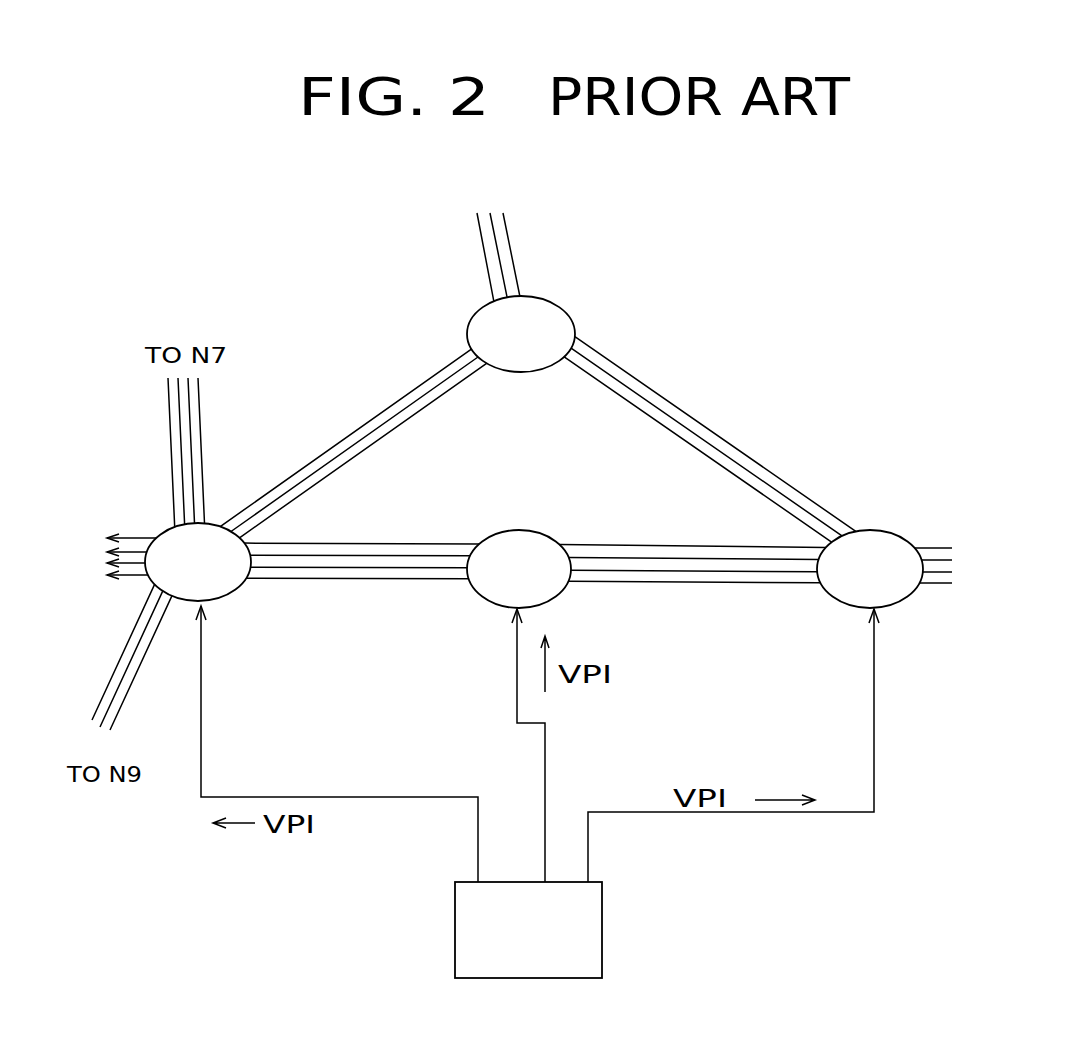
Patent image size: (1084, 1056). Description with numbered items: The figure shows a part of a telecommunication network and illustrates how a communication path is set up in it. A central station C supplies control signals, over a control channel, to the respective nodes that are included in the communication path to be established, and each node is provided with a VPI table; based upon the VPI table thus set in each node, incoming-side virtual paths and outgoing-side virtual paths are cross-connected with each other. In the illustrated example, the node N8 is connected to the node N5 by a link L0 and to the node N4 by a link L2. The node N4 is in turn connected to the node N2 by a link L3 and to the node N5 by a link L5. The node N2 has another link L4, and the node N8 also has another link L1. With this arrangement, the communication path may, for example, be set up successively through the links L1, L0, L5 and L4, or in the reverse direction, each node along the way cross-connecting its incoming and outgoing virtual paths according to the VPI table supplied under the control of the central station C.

The node N4 is at (557, 299).
The node N8 is at (243, 597).
The node N5 is at (565, 594).
The node N2 is at (858, 531).
The link L0 is at (390, 595).
The link L1 is at (132, 594).
The link L2 is at (359, 413).
The link L3 is at (687, 403).
The link L4 is at (937, 600).
The link L5 is at (717, 600).
The central station C is at (602, 936).